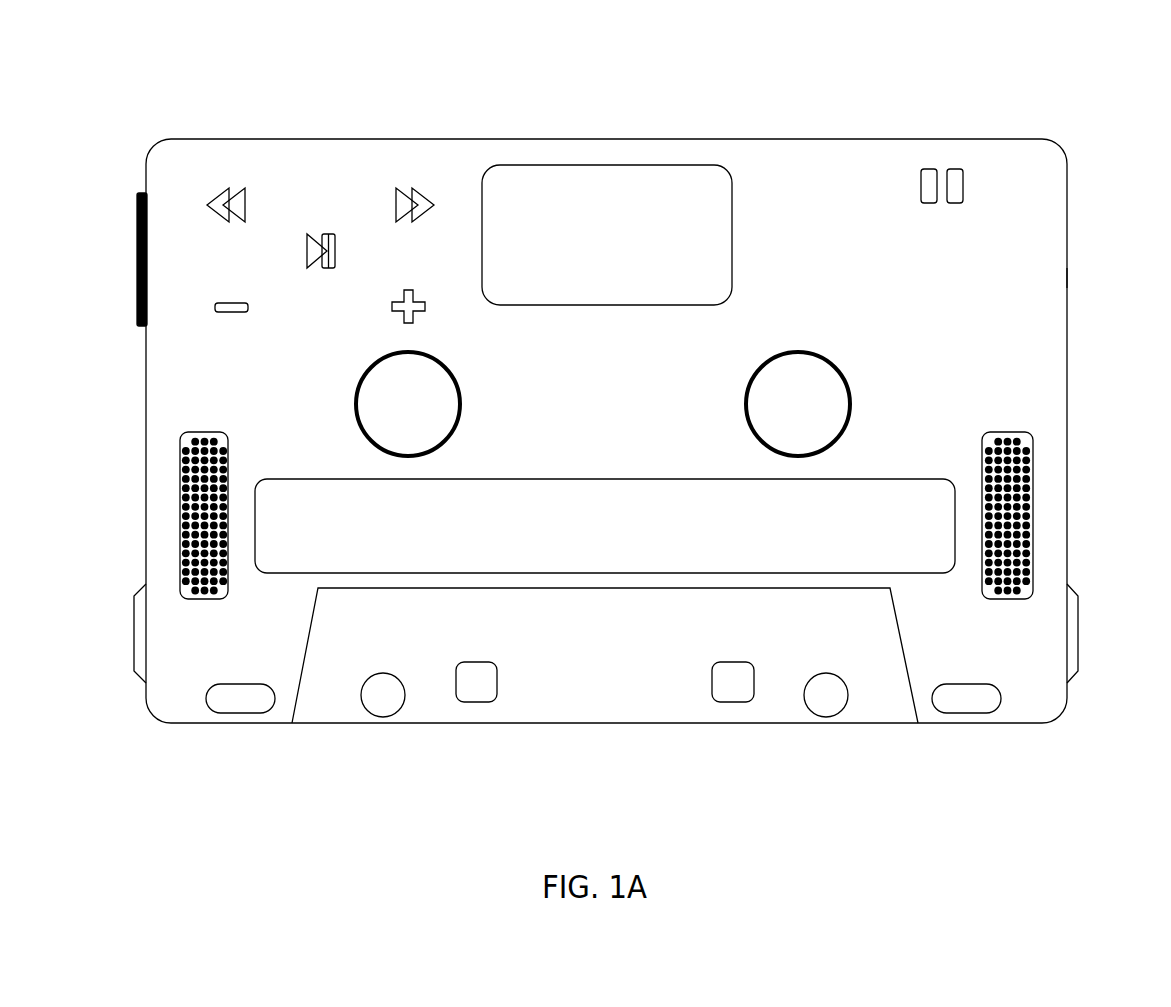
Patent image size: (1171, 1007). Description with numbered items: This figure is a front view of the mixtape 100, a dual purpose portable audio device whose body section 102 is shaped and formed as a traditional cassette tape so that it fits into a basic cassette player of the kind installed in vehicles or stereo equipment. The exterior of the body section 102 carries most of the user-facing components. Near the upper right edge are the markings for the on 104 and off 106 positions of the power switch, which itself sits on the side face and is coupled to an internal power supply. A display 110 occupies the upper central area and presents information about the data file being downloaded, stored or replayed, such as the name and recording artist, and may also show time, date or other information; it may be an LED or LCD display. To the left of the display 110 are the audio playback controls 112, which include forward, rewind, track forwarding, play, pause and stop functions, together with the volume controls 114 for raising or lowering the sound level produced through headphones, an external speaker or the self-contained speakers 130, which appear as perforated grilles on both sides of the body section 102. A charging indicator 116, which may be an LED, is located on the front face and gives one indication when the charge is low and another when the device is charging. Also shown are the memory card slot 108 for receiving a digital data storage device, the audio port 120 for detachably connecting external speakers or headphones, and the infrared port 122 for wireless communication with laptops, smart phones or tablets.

The mixtape 100 is at (602, 374).
The body section 102 is at (968, 100).
The on position marking 104 is at (1070, 220).
The off position marking 106 is at (1070, 277).
The memory card slot 108 is at (123, 265).
The display 110 is at (607, 235).
The audio playback controls 112 is at (320, 228).
The volume controls 114 is at (321, 335).
The charging indicator 116 is at (938, 220).
The audio port 120 is at (605, 526).
The infrared port 122 is at (124, 645).
The self-contained speakers 130 is at (208, 430).